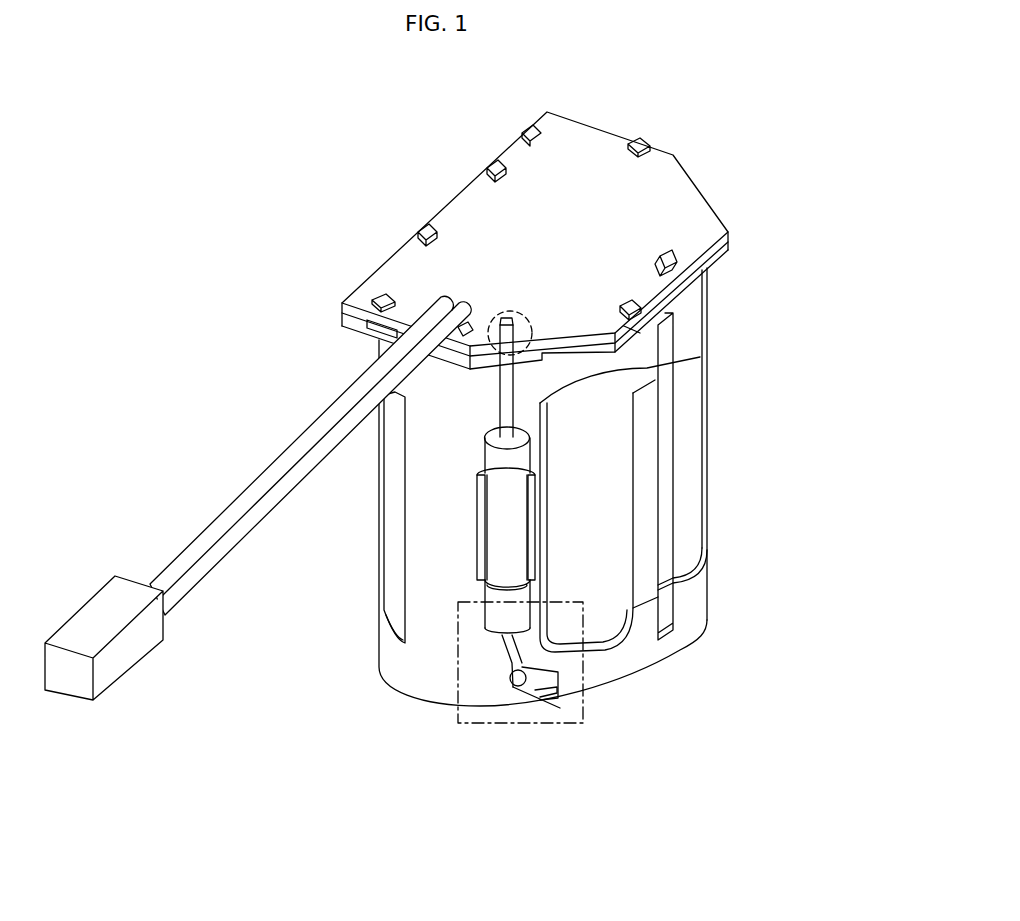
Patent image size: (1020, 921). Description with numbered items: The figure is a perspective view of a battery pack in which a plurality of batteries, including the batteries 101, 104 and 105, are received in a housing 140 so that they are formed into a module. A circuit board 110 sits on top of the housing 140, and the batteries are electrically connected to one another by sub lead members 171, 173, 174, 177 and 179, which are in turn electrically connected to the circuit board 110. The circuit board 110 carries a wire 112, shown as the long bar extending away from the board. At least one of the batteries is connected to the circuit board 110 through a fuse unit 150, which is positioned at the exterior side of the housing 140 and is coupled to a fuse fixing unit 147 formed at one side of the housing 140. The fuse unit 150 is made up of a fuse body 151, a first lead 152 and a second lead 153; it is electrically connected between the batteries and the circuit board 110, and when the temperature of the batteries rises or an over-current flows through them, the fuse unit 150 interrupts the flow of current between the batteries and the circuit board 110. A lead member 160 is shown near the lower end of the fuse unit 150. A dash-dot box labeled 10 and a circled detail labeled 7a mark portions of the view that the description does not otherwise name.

The connecting portion 10 is at (483, 720).
The lever connection pin 7a is at (533, 336).
The battery 101 is at (377, 473).
The battery 104 is at (692, 480).
The battery 105 is at (615, 555).
The circuit board 110 is at (683, 187).
The wire 112 is at (258, 487).
The housing 140 is at (715, 278).
The fuse fixing unit 147 is at (537, 565).
The fuse unit 150 is at (408, 768).
The fuse body 151 is at (498, 457).
The first lead 152 is at (495, 407).
The second lead 153 is at (512, 650).
The lead member 160 is at (528, 705).
The sub lead member 171 is at (380, 295).
The sub lead member 173 is at (497, 162).
The sub lead member 174 is at (667, 253).
The sub lead member 177 is at (427, 222).
The sub lead member 179 is at (637, 137).